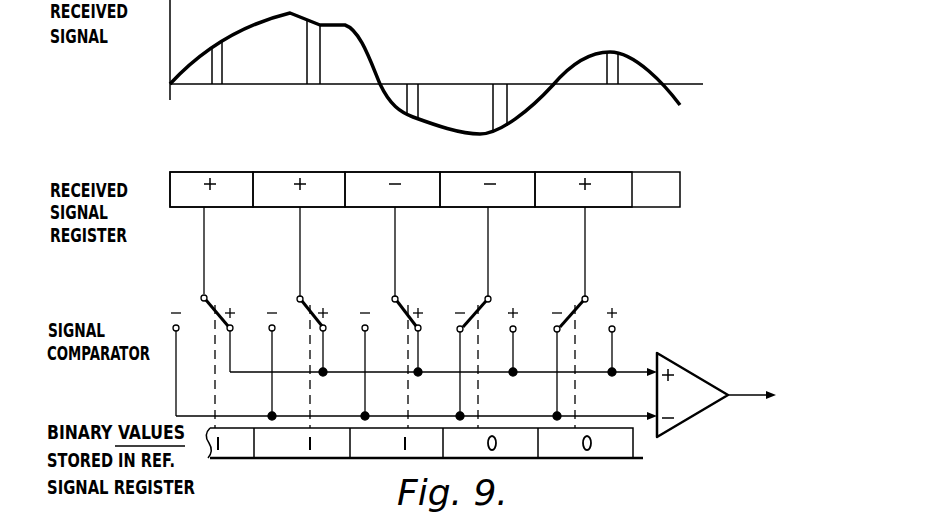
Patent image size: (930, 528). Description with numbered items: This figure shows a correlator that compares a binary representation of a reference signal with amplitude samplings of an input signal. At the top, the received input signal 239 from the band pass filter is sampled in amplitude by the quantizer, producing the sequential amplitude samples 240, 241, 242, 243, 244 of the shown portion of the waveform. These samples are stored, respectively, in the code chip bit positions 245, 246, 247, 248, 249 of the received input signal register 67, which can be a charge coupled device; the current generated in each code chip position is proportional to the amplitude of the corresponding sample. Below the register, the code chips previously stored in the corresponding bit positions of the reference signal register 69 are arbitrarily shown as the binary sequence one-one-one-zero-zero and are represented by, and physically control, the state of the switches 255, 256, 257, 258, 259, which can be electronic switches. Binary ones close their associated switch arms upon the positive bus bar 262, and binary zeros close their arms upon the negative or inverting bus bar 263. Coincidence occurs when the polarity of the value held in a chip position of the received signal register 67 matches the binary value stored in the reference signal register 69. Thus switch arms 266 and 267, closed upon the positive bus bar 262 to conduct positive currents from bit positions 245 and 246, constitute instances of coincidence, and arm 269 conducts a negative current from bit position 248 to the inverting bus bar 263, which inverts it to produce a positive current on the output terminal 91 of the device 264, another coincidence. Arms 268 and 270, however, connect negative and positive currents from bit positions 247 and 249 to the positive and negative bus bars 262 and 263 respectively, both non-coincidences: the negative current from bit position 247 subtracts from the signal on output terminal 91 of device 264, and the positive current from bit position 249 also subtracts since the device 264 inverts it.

The input signal 239 is at (668, 64).
The amplitude sample 240 is at (224, 62).
The amplitude sample 241 is at (321, 72).
The amplitude sample 242 is at (418, 100).
The amplitude sample 243 is at (507, 100).
The amplitude sample 244 is at (619, 73).
The received input signal register 67 is at (461, 169).
The bit position 245 is at (222, 173).
The bit position 246 is at (308, 173).
The bit position 247 is at (393, 173).
The bit position 248 is at (522, 173).
The bit position 249 is at (601, 173).
The switch arm 266 is at (212, 304).
The switch arm 267 is at (308, 304).
The switch arm 268 is at (405, 307).
The switch arm 269 is at (497, 304).
The switch arm 270 is at (593, 304).
The switch 255 is at (201, 321).
The switch 256 is at (295, 321).
The switch 257 is at (389, 321).
The switch 258 is at (494, 321).
The switch 259 is at (587, 322).
The positive bus bar 262 is at (629, 372).
The negative or inverting bus bar 263 is at (636, 426).
The device 264 is at (700, 378).
The output terminal 91 is at (743, 395).
The reference signal register 69 is at (640, 466).